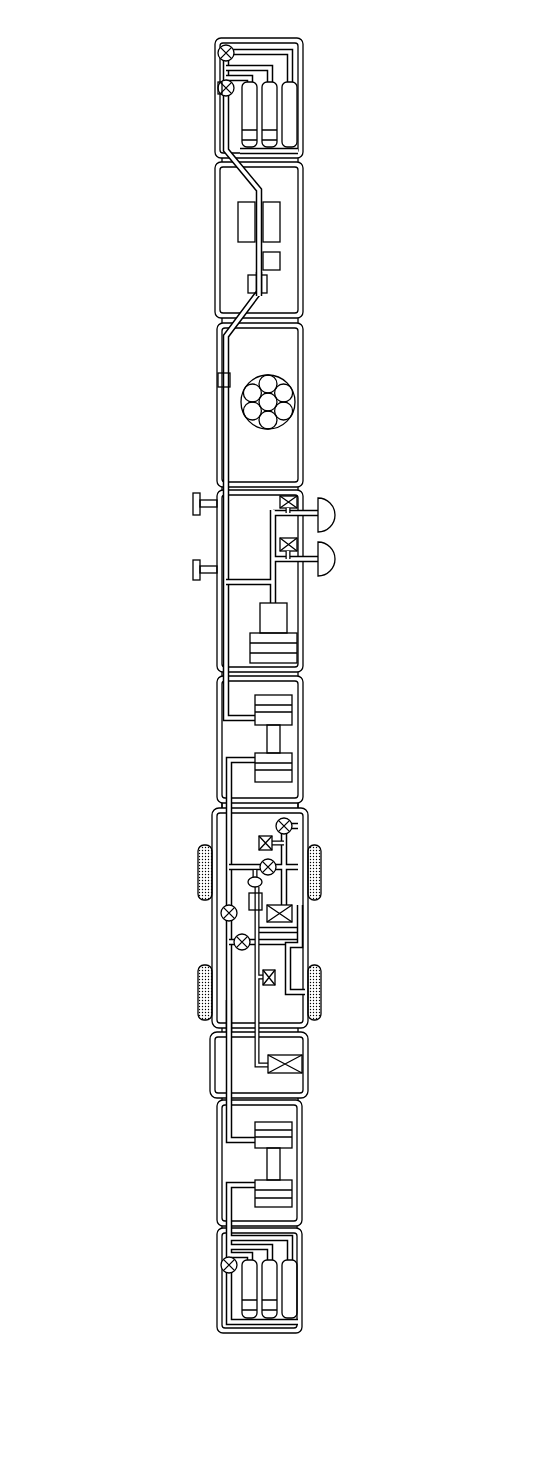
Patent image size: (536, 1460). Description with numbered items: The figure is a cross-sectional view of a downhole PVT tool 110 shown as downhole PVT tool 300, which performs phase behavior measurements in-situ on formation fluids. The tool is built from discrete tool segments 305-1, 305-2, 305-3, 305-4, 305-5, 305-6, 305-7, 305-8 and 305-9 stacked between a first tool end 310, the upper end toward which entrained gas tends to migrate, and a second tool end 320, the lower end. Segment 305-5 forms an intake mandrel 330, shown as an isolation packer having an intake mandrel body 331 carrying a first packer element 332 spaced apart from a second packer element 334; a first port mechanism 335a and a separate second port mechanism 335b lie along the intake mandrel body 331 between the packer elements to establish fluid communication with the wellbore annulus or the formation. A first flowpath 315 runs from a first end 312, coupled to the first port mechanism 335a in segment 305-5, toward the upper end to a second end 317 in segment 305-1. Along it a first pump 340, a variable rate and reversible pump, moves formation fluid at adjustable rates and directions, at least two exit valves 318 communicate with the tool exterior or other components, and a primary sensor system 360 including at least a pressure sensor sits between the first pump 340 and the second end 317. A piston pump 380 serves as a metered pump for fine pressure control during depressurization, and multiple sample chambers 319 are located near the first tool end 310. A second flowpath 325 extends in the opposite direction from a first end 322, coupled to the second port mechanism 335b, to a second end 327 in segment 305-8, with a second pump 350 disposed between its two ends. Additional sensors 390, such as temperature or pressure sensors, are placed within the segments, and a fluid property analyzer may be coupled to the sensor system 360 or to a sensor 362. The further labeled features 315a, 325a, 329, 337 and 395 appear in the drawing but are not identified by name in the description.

The downhole PVT tool 300 is at (118, 76).
The downhole PVT tool 110 is at (110, 358).
The first tool end 310 is at (312, 62).
The second tool end 320 is at (200, 1316).
The intake mandrel 330 is at (110, 826).
The tool segment 305-1 is at (306, 143).
The tool segment 305-2 is at (214, 240).
The tool segment 305-3 is at (306, 360).
The tool segment 305-4 is at (308, 775).
The tool segment 305-5 is at (212, 900).
The tool segment 305-6 is at (208, 1052).
The tool segment 305-7 is at (305, 1168).
The tool segment 305-8 is at (305, 1298).
The tool segment 305-9 is at (306, 614).
The first end of first flowpath 312 is at (213, 805).
The first flowpath 315 is at (236, 180).
The flow line branch 315a is at (220, 836).
The second end of first flowpath 317 is at (214, 124).
The exit valve 318 is at (216, 90).
The sample chambers 319 is at (268, 100).
The first end of second flowpath 322 is at (234, 942).
The second flowpath 325 is at (220, 1075).
The flow line branch 325a is at (208, 1012).
The second end of second flowpath 327 is at (215, 1284).
The sample chambers 329 is at (270, 1288).
The intake mandrel body 331 is at (316, 1022).
The first packer element 332 is at (200, 870).
The second packer element 334 is at (200, 1000).
The first port mechanism 335a is at (300, 905).
The second port mechanism 335b is at (306, 950).
The flow line 337 is at (232, 946).
The first pump 340 is at (243, 740).
The second pump 350 is at (243, 1163).
The primary sensor system 360 is at (281, 218).
The sensor 362 is at (268, 400).
The piston pump 380 is at (285, 650).
The additional sensors 390 is at (281, 259).
The valve 395 is at (215, 45).